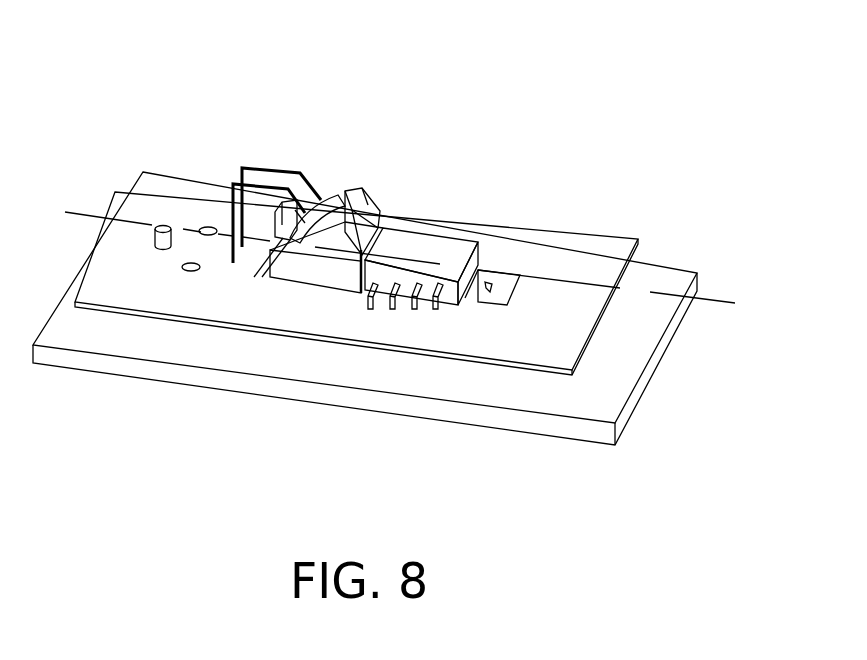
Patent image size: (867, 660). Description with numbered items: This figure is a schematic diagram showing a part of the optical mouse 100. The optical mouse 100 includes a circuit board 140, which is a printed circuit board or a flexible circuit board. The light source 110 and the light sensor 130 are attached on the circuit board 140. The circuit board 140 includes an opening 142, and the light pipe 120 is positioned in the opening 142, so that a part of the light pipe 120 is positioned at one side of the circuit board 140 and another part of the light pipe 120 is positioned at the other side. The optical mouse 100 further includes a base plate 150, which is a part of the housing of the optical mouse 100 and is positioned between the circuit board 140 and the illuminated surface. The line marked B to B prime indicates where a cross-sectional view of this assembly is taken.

The optical mouse 100 is at (202, 33).
The light source 110 is at (330, 193).
The light pipe 120 is at (353, 195).
The light sensor 130 is at (442, 252).
The circuit board 140 is at (618, 252).
The opening 142 is at (502, 289).
The base plate 150 is at (675, 283).